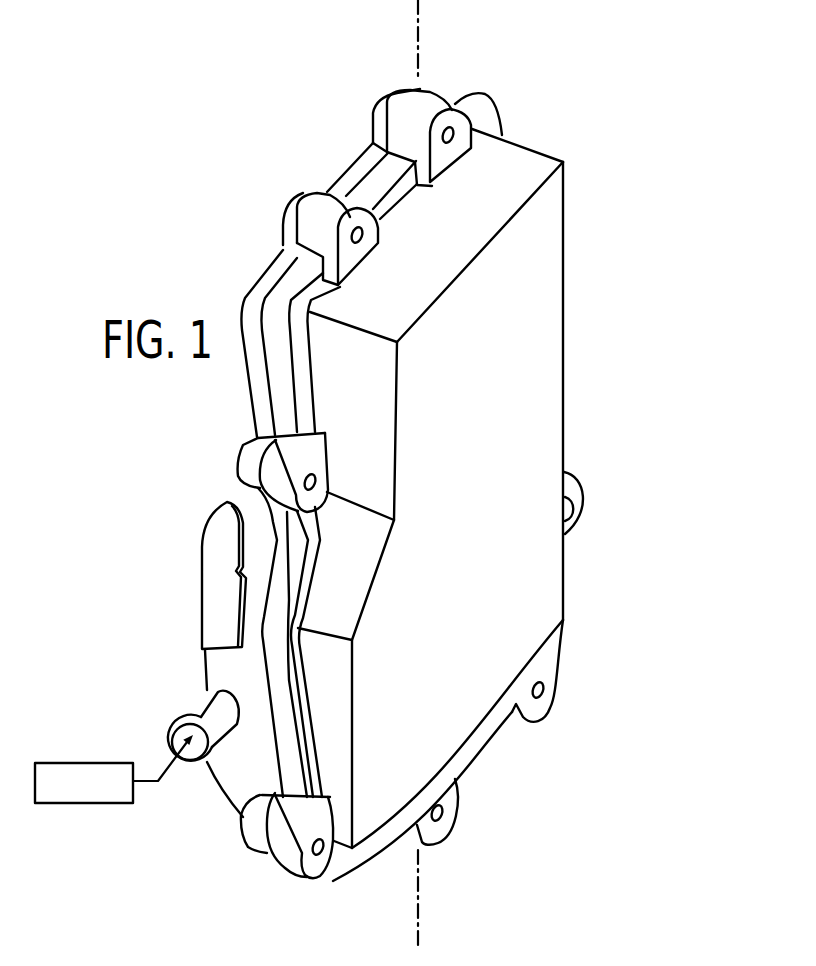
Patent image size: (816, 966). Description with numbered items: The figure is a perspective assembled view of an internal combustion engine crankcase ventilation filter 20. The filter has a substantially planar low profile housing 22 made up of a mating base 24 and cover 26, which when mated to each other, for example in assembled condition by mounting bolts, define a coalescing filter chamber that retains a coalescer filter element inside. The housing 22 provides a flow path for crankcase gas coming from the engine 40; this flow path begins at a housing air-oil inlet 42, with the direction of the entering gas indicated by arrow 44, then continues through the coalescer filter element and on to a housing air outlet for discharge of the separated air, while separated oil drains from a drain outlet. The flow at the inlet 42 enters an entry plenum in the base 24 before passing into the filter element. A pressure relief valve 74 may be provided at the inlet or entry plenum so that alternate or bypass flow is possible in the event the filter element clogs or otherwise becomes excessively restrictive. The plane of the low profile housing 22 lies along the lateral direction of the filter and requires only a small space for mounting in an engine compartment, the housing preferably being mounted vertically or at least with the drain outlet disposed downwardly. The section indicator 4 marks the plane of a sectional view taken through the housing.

The internal combustion engine crankcase ventilation filter 20 is at (673, 272).
The housing 22 is at (565, 402).
The base 24 is at (273, 263).
The cover 26 is at (463, 97).
The engine 40 is at (52, 762).
The housing air-oil inlet 42 is at (168, 735).
The arrow 44 is at (168, 772).
The pressure relief valve 74 is at (206, 546).
The section view indicator 4 is at (418, 947).